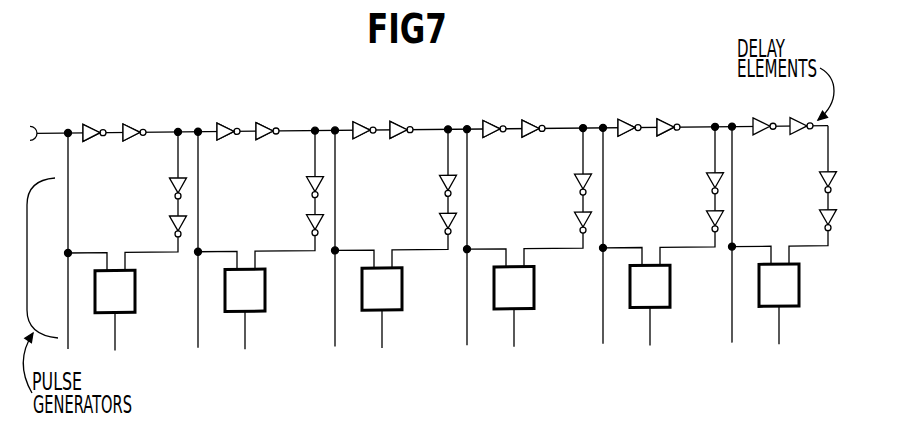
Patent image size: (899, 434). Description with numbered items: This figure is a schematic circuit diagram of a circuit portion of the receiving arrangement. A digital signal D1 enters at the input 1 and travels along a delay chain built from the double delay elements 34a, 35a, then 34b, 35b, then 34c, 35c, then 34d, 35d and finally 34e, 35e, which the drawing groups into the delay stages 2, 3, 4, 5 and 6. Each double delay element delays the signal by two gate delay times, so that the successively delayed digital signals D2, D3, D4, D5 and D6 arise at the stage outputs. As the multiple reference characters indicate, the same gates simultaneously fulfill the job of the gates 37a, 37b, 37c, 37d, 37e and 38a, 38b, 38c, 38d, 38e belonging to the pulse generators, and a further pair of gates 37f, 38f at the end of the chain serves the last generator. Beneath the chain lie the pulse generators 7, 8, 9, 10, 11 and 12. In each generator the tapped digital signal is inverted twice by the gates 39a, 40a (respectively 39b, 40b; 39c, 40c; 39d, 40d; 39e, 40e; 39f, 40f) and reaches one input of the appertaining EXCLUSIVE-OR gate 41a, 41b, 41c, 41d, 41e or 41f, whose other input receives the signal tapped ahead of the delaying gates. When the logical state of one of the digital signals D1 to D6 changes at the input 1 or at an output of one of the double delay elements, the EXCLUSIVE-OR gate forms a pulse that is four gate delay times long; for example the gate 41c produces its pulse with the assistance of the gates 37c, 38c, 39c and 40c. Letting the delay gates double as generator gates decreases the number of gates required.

The input 1 is at (34, 149).
The first delay stage 2 is at (113, 117).
The second delay stage 3 is at (247, 116).
The third delay stage 4 is at (382, 115).
The fourth delay stage 5 is at (513, 113).
The fifth delay stage 6 is at (648, 112).
The pulse generator 7 is at (126, 241).
The pulse generator 8 is at (259, 240).
The pulse generator 9 is at (394, 238).
The pulse generator 10 is at (528, 237).
The pulse generator 11 is at (662, 236).
The pulse generator 12 is at (783, 235).
The delay element gate 34a is at (91, 117).
The delay element gate 34b is at (225, 115).
The delay element gate 34c is at (361, 114).
The delay element gate 34d is at (491, 113).
The delay element gate 34e is at (626, 111).
The delay element gate 35a is at (136, 116).
The delay element gate 35b is at (269, 115).
The delay element gate 35c is at (403, 114).
The delay element gate 35d is at (535, 112).
The delay element gate 35e is at (670, 111).
The pulse generator gate 37a is at (90, 151).
The pulse generator gate 37b is at (224, 150).
The pulse generator gate 37c is at (360, 149).
The pulse generator gate 37d is at (490, 147).
The pulse generator gate 37e is at (625, 146).
The pulse generator gate 37f is at (760, 110).
The pulse generator gate 38a is at (136, 151).
The pulse generator gate 38b is at (269, 149).
The pulse generator gate 38c is at (403, 148).
The pulse generator gate 38d is at (535, 147).
The pulse generator gate 38e is at (670, 146).
The pulse generator gate 38f is at (802, 110).
The pulse generator gate 39a is at (164, 189).
The pulse generator gate 39b is at (301, 188).
The pulse generator gate 39c is at (434, 186).
The pulse generator gate 39d is at (569, 185).
The pulse generator gate 39e is at (701, 184).
The pulse generator gate 39f is at (814, 183).
The pulse generator gate 40a is at (164, 231).
The pulse generator gate 40b is at (301, 230).
The pulse generator gate 40c is at (434, 228).
The pulse generator gate 40d is at (569, 227).
The pulse generator gate 40e is at (701, 226).
The pulse generator gate 40f is at (814, 225).
The EXCLUSIVE-OR gate 41a is at (132, 291).
The EXCLUSIVE-OR gate 41b is at (262, 290).
The EXCLUSIVE-OR gate 41c is at (399, 288).
The EXCLUSIVE-OR gate 41d is at (531, 287).
The EXCLUSIVE-OR gate 41e is at (667, 286).
The EXCLUSIVE-OR gate 41f is at (796, 285).
The digital signal D1 is at (58, 120).
The digital signal D2 is at (188, 119).
The digital signal D3 is at (325, 117).
The digital signal D4 is at (458, 116).
The digital signal D5 is at (593, 115).
The digital signal D6 is at (724, 114).